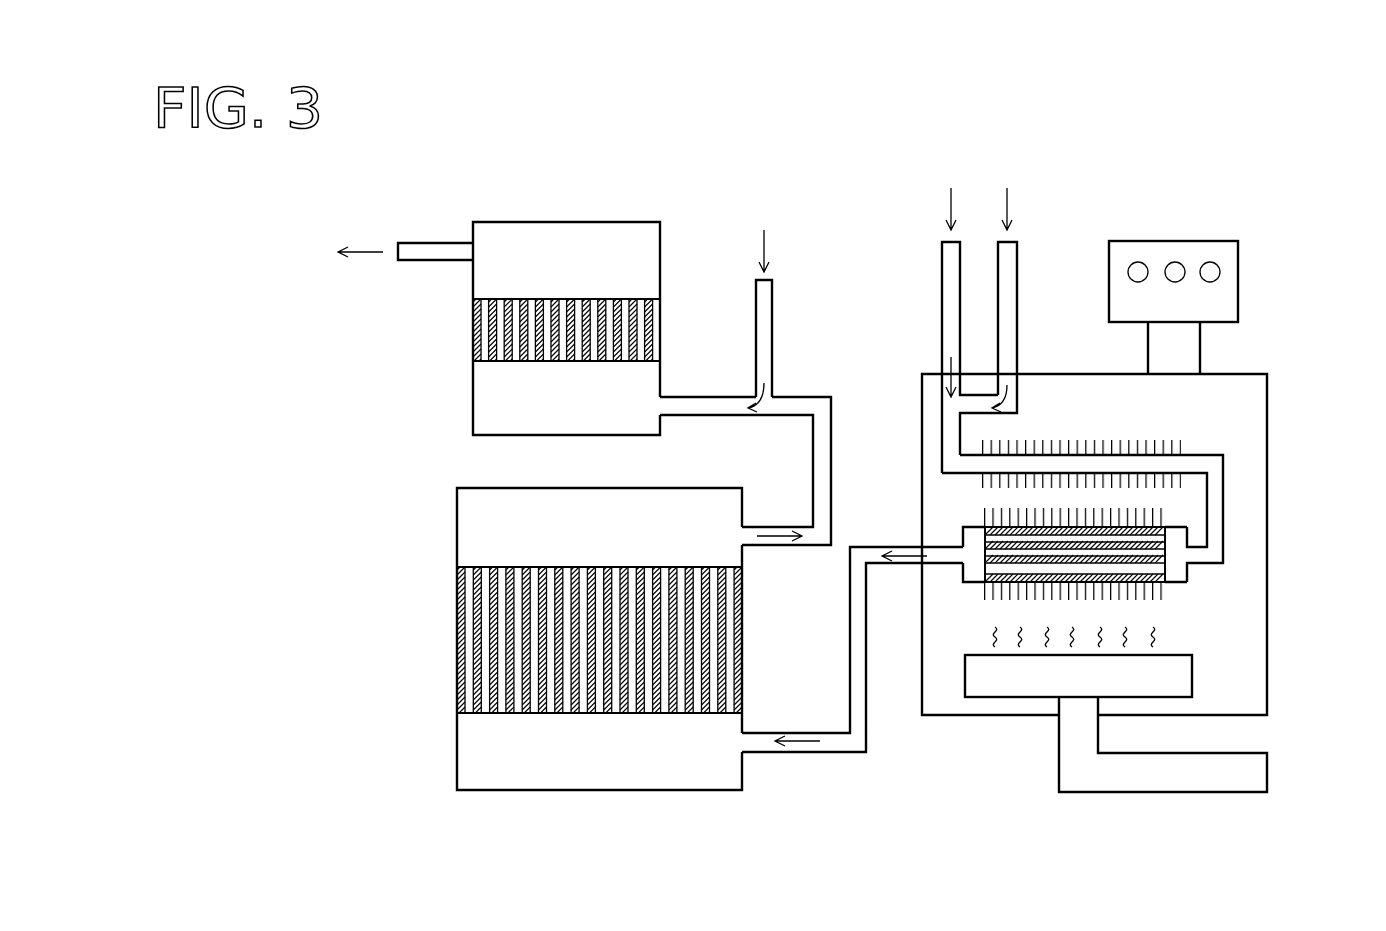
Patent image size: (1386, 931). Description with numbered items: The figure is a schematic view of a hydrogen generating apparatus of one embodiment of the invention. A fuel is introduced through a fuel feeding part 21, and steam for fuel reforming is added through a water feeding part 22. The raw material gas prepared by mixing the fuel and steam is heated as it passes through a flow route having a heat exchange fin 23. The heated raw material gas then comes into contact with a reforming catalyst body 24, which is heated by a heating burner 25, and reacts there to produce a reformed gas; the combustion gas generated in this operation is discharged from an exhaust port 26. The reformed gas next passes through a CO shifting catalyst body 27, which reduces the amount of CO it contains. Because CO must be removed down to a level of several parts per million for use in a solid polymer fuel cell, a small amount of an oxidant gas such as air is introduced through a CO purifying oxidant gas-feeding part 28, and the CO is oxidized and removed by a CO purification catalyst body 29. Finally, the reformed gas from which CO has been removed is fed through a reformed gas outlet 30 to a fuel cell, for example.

The fuel feeding part 21 is at (942, 274).
The water feeding part 22 is at (1017, 275).
The heat exchange fin 23 is at (1180, 445).
The reforming catalyst body 24 is at (1168, 560).
The heating burner 25 is at (992, 688).
The exhaust port 26 is at (1175, 262).
The CO shifting catalyst body 27 is at (640, 717).
The CO purifying oxidant gas-feeding part 28 is at (756, 323).
The CO purification catalyst body 29 is at (557, 299).
The reformed gas outlet 30 is at (428, 243).